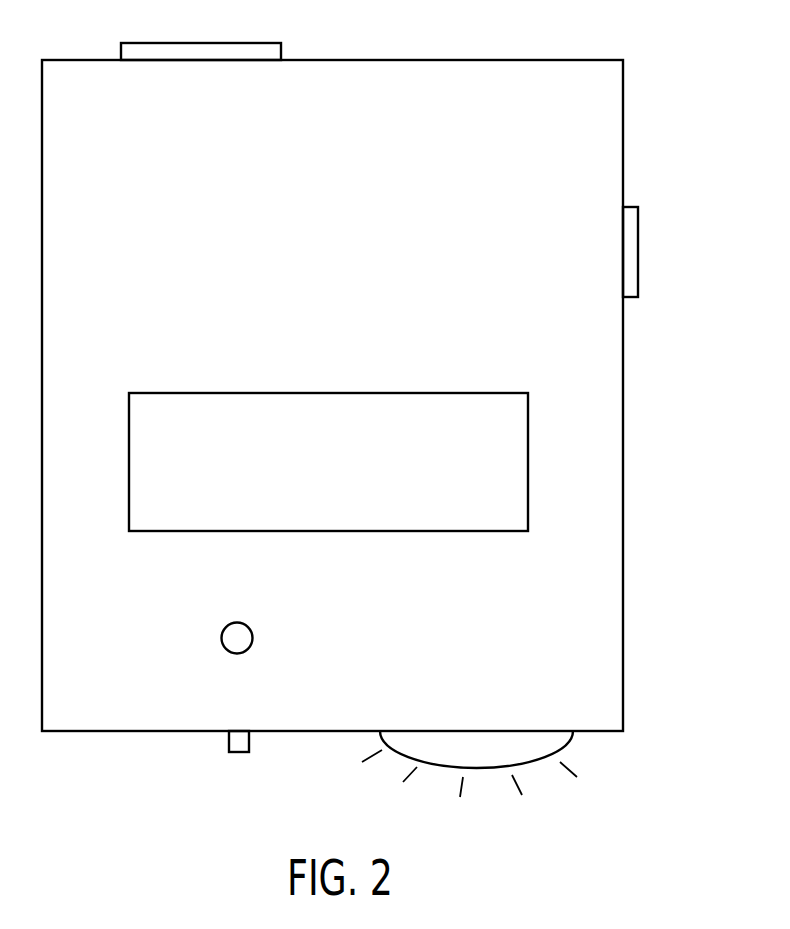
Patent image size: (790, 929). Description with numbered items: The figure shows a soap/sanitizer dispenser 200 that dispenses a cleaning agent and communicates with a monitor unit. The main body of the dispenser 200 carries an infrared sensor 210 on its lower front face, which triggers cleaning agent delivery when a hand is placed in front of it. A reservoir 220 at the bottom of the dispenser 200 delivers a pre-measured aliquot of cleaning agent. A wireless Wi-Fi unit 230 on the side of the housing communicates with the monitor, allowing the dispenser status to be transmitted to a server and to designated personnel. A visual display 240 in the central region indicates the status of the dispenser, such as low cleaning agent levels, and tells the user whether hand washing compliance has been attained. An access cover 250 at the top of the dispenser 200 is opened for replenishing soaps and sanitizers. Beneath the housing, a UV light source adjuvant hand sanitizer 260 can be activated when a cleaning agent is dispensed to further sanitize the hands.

The soap/sanitizer dispenser 200 is at (443, 60).
The infrared sensor 210 is at (240, 622).
The reservoir 220 is at (240, 752).
The wireless Wi-Fi unit 230 is at (638, 251).
The visual display 240 is at (210, 393).
The access cover 250 is at (142, 43).
The UV light source adjuvant hand sanitizer 260 is at (477, 731).